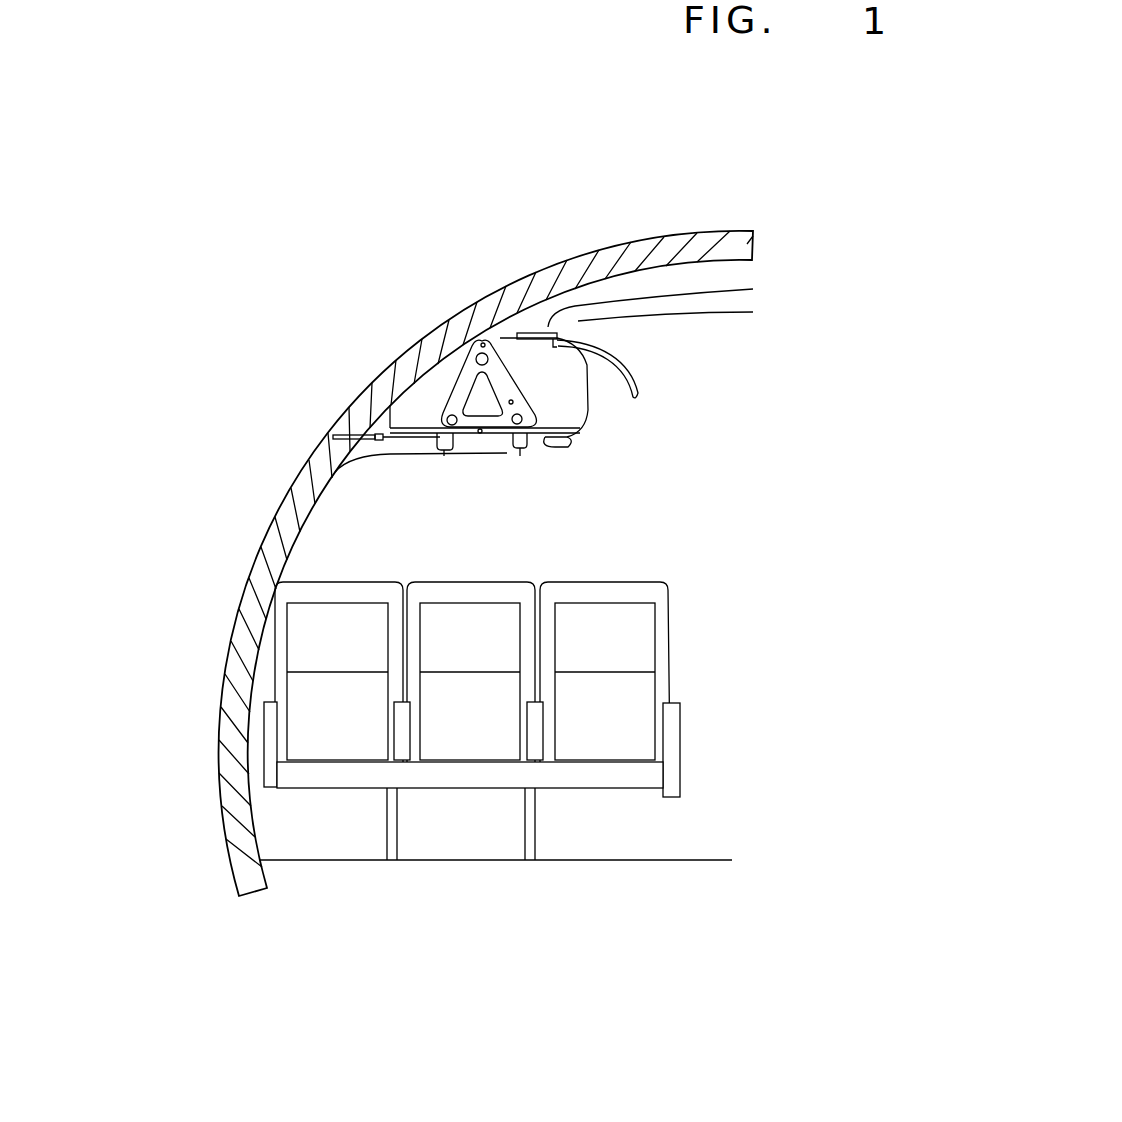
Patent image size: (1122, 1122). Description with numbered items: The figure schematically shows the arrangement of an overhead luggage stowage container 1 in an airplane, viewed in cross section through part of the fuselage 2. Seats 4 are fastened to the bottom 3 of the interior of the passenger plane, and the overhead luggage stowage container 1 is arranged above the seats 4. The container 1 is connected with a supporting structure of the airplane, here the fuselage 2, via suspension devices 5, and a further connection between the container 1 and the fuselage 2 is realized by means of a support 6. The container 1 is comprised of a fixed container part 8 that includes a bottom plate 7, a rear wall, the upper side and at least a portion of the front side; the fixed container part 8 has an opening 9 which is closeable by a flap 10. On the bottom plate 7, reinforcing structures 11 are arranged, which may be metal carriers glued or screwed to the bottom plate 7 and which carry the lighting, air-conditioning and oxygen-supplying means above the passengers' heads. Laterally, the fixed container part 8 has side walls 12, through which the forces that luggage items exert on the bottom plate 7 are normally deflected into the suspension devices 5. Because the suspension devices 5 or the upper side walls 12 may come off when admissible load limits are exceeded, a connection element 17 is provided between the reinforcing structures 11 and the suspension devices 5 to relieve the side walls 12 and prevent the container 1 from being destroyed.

The overhead luggage stowage container 1 is at (433, 380).
The fuselage 2 is at (605, 268).
The bottom 3 is at (472, 861).
The seats 4 is at (597, 710).
The suspension devices 5 is at (482, 340).
The support 6 is at (390, 436).
The bottom plate 7 is at (390, 405).
The fixed container part 8 is at (448, 365).
The opening 9 is at (590, 396).
The flap 10 is at (620, 369).
The reinforcing structures 11 is at (530, 442).
The side walls 12 is at (537, 390).
The connection element 17 is at (513, 403).